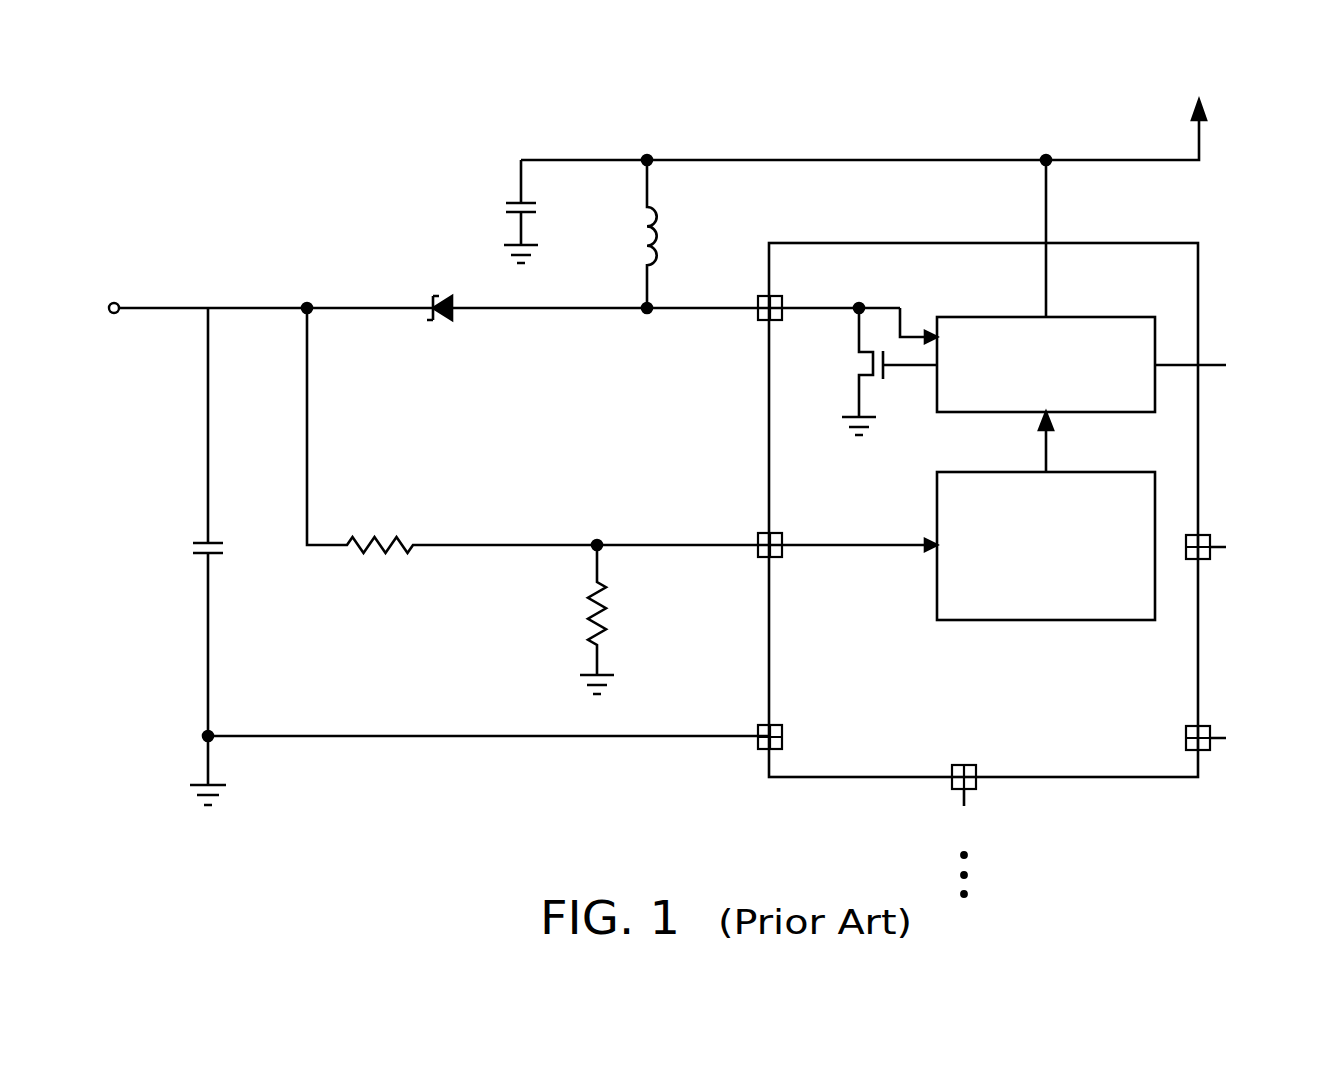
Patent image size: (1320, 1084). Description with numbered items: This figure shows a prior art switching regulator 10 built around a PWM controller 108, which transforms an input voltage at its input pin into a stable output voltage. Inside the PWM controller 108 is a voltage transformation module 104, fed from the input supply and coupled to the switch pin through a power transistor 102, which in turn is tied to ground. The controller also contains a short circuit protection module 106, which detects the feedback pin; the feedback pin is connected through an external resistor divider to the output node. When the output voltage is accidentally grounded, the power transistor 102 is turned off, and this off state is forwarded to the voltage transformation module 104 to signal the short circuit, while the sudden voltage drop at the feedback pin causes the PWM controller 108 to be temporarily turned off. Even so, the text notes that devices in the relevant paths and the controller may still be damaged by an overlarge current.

The voltage converter circuit 10 is at (1300, 99).
The power transistor 102 is at (868, 376).
The voltage transformation module 104 is at (1130, 317).
The short circuit protection module 106 is at (1044, 620).
The PWM controller 108 is at (1137, 755).